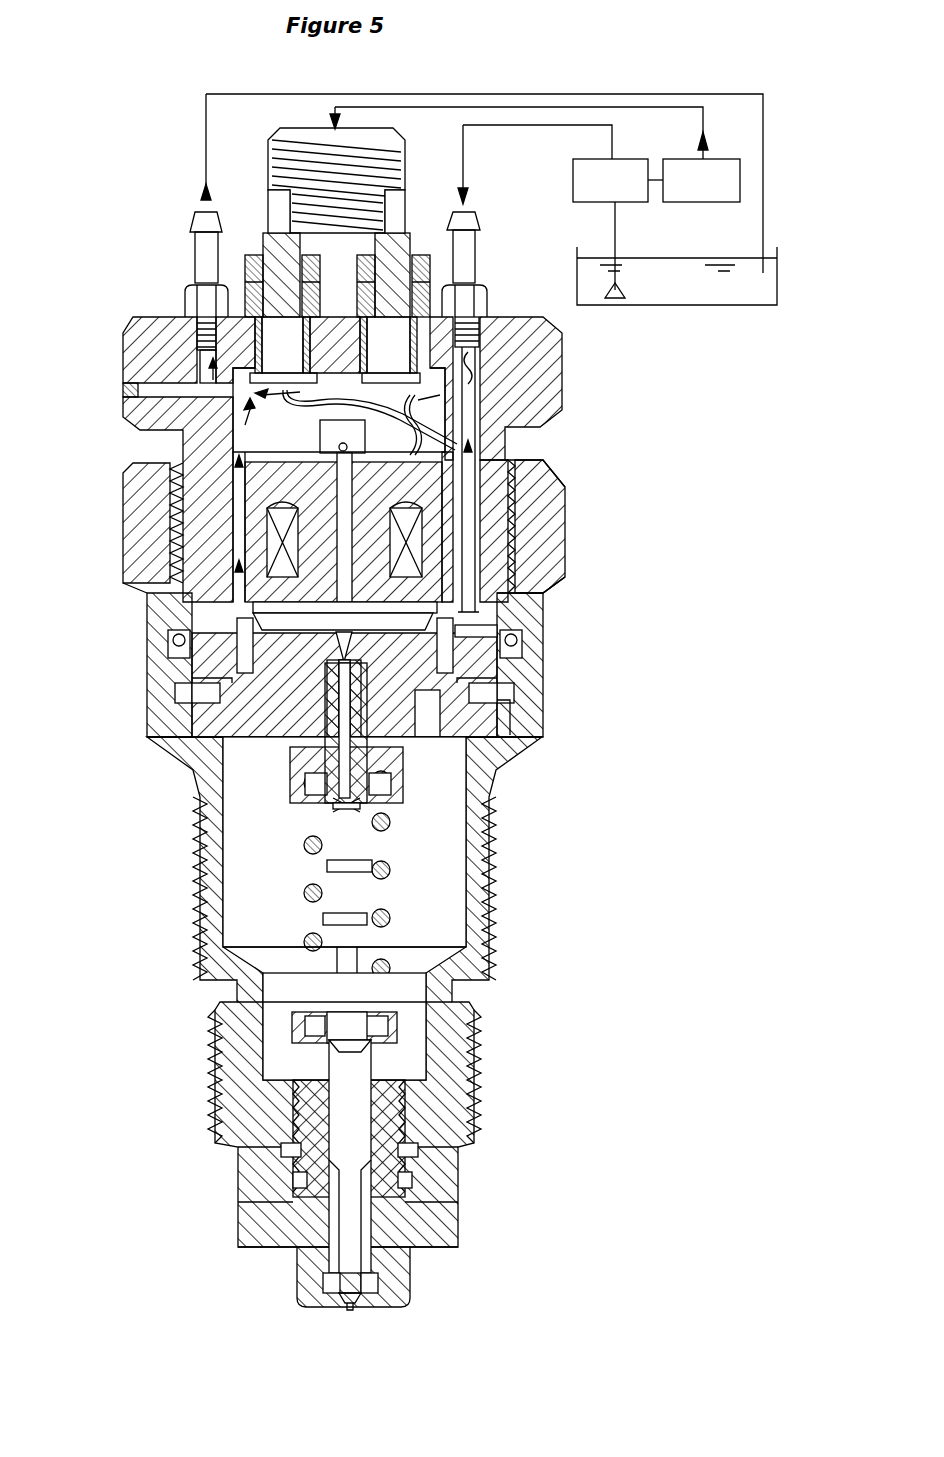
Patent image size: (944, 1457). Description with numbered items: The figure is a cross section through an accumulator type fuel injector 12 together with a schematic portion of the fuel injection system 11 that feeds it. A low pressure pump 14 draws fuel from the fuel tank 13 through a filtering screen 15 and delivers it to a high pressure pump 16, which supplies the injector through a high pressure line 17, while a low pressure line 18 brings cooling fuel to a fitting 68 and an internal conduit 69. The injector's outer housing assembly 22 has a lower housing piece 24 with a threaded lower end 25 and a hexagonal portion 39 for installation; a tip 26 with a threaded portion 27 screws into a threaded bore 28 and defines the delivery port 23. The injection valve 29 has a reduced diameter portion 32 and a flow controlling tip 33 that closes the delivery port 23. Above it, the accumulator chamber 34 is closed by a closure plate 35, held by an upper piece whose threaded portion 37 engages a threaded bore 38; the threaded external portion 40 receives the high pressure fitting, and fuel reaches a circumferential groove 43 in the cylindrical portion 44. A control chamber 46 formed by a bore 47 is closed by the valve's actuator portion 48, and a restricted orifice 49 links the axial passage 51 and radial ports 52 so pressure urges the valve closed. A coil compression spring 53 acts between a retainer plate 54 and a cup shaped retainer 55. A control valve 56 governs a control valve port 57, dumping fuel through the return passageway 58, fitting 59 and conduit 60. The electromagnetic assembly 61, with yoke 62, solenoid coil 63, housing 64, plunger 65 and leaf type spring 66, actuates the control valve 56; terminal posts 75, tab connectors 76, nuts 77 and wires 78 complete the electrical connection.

The fuel injection system 11 is at (652, 555).
The fuel injector 12 is at (600, 640).
The fuel tank 13 is at (777, 283).
The low pressure pump 14 is at (573, 180).
The filtering screen 15 is at (627, 292).
The high pressure pump 16 is at (745, 181).
The high pressure line 17 is at (557, 105).
The low pressure line 18 is at (480, 125).
The outer housing assembly 22 is at (570, 525).
The delivery port 23 is at (362, 1300).
The lower housing piece 24 is at (545, 727).
The threaded lower end 25 is at (427, 1022).
The tip 26 is at (458, 1210).
The threaded portion 27 is at (472, 1097).
The threaded bore 28 is at (408, 1160).
The injection valve 29 is at (365, 893).
The reduced diameter portion 32 is at (333, 1232).
The flow controlling tip 33 is at (346, 1306).
The accumulator chamber 34 is at (432, 870).
The closure plate 35 is at (520, 717).
The threaded portion 37 is at (548, 582).
The threaded bore 38 is at (515, 518).
The hexagonal portion 39 is at (567, 492).
The threaded external portion 40 is at (268, 143).
The circumferential groove 43 is at (180, 680).
The cylindrical portion 44 is at (192, 715).
The control chamber 46 is at (300, 622).
The bore 47 is at (330, 752).
The actuator portion 48 is at (428, 700).
The restricted orifice 49 is at (335, 632).
The axial passage 51 is at (297, 748).
The radial ports 52 is at (340, 805).
The coil compression spring 53 is at (370, 920).
The retainer plate 54 is at (392, 778).
The cup shaped retainer 55 is at (405, 1030).
The control valve 56 is at (255, 607).
The control valve port 57 is at (500, 642).
The return passageway 58 is at (205, 352).
The fitting 59 is at (195, 275).
The conduit 60 is at (252, 94).
The electromagnetic assembly 61 is at (245, 490).
The yoke 62 is at (170, 641).
The solenoid coil 63 is at (175, 520).
The housing or yoke 64 is at (238, 470).
The plunger 65 is at (478, 462).
The leaf type spring 66 is at (339, 410).
The fitting 68 is at (477, 255).
The conduit 69 is at (460, 350).
The terminal posts 75 is at (270, 233).
The electrical tab connectors 76 is at (245, 282).
The nuts 77 is at (412, 300).
The wires 78 is at (440, 398).